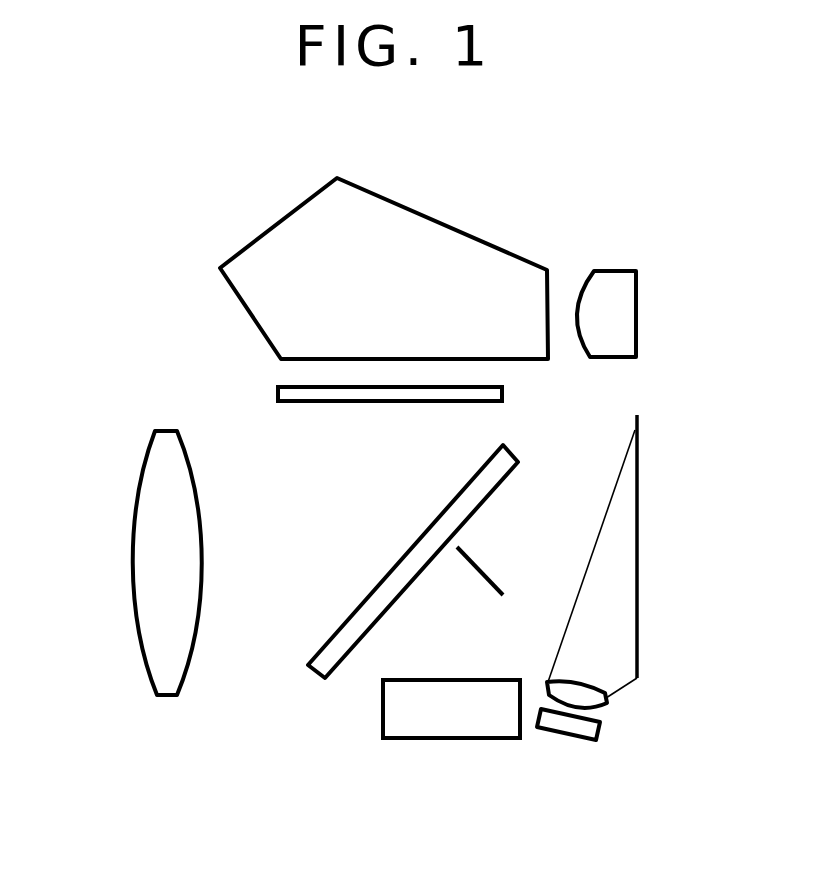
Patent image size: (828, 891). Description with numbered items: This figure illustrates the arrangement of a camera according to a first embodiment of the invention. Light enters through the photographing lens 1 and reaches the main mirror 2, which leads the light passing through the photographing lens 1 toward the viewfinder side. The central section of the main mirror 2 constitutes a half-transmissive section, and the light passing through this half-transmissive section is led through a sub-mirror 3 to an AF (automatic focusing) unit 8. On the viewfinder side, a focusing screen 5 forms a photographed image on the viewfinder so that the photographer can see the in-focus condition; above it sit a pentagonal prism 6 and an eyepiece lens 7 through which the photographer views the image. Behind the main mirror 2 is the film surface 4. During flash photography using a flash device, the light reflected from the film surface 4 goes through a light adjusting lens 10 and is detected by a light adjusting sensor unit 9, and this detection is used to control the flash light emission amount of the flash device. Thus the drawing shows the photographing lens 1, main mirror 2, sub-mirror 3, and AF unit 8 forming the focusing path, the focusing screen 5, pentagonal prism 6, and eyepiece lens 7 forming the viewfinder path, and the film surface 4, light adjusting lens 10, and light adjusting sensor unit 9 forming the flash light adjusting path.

The photographing lens 1 is at (148, 532).
The main mirror 2 is at (395, 570).
The sub-mirror 3 is at (487, 573).
The film surface 4 is at (637, 485).
The focusing screen 5 is at (316, 392).
The pentagonal prism 6 is at (420, 238).
The eyepiece lens 7 is at (628, 302).
The AF unit 8 is at (457, 727).
The light adjusting sensor unit 9 is at (567, 728).
The light adjusting lens 10 is at (603, 698).